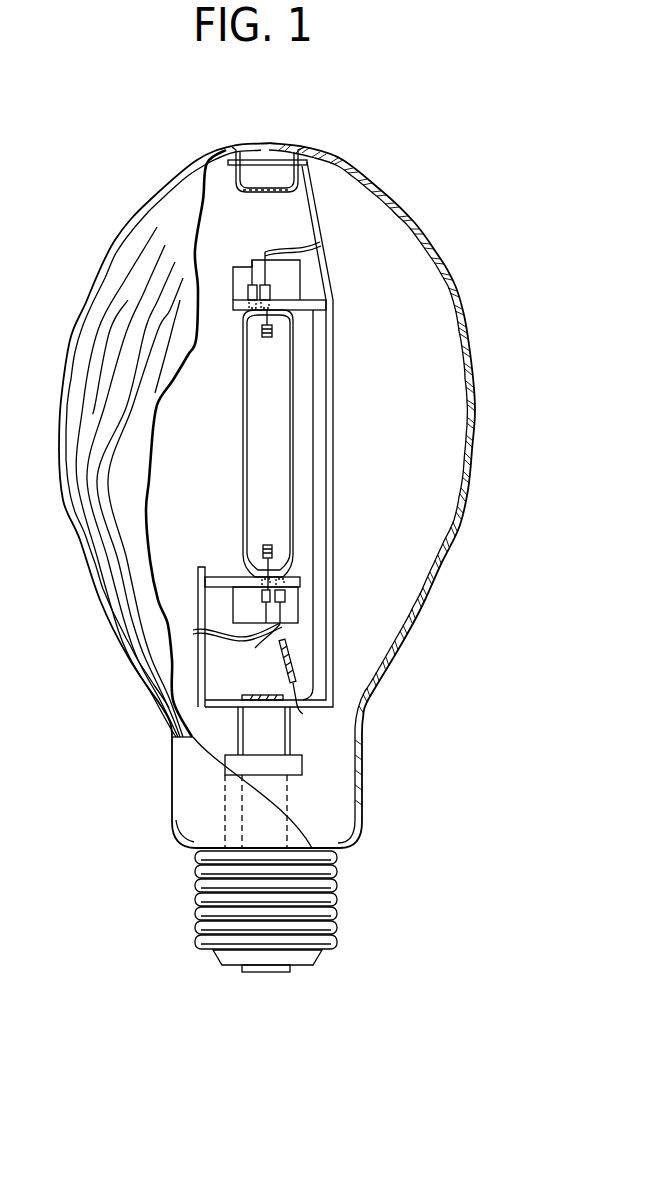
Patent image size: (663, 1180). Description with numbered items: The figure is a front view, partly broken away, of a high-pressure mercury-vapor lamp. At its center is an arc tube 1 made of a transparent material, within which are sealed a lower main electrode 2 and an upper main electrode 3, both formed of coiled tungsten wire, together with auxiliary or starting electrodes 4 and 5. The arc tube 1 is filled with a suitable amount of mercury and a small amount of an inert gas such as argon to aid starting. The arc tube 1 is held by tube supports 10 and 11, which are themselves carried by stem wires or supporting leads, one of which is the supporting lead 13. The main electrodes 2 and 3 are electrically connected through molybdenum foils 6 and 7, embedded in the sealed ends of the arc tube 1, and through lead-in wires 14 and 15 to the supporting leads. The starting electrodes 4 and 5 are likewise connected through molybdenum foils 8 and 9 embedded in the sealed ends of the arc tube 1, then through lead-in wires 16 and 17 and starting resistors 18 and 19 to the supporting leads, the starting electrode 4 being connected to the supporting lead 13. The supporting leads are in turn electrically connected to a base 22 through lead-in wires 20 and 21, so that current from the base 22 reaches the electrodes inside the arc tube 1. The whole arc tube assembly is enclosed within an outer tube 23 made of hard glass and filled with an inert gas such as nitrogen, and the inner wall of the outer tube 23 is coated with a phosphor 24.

The arc tube 1 is at (243, 410).
The lower main electrode 2 is at (266, 545).
The upper main electrode 3 is at (264, 340).
The auxiliary or starting electrode 4 is at (278, 553).
The auxiliary or starting electrode 5 is at (255, 330).
The molybdenum foil 6 is at (262, 594).
The molybdenum foil 7 is at (285, 290).
The molybdenum foil 8 is at (285, 598).
The molybdenum foil 9 is at (248, 293).
The tube support 10 is at (203, 568).
The tube support 11 is at (300, 318).
The stem wire or supporting lead 13 is at (333, 580).
The lead-in wire 14 is at (222, 632).
The lead-in wire 15 is at (290, 246).
The lead-in wire 16 is at (274, 636).
The lead-in wire 17 is at (313, 518).
The starting resistor 18 is at (292, 662).
The starting resistor 19 is at (296, 702).
The lead-in wire 20 is at (240, 770).
The lead-in wire 21 is at (297, 783).
The base 22 is at (345, 872).
The outer tube 23 is at (457, 298).
The phosphor 24 is at (462, 338).